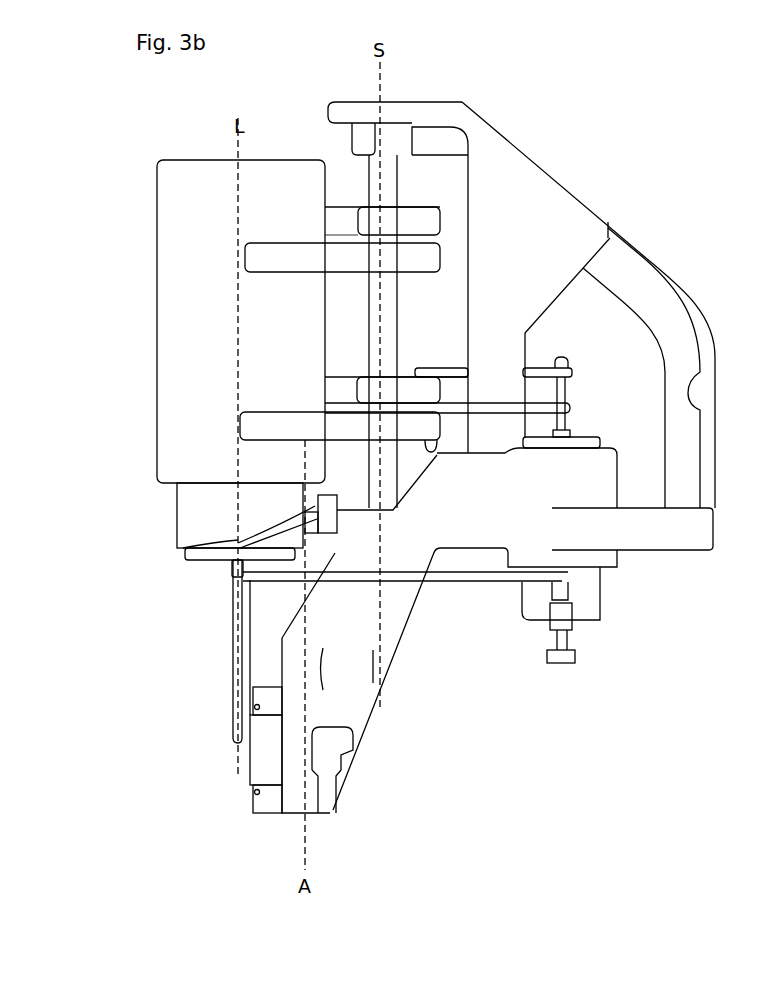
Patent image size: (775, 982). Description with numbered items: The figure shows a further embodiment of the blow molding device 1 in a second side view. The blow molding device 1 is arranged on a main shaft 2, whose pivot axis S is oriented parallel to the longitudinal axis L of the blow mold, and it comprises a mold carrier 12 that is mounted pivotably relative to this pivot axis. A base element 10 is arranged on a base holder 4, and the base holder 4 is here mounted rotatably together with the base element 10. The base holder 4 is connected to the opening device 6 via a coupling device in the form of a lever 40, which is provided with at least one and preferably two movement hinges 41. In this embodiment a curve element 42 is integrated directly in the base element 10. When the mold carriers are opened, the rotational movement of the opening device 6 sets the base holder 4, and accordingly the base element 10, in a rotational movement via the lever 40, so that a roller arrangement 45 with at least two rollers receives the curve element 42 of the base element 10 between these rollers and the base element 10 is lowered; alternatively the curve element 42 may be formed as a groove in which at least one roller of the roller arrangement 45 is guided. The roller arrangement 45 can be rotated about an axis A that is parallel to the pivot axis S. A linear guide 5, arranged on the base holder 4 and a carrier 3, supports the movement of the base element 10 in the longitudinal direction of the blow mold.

The blow molding device 1 is at (630, 131).
The main shaft 2 is at (368, 175).
The carrier 3 is at (540, 215).
The base holder 4 is at (233, 618).
The linear guide 5 is at (265, 757).
The opening device 6 is at (585, 578).
The base element 10 is at (193, 500).
The mold carrier 12 is at (183, 257).
The coupling device in the form of a lever 40 is at (473, 575).
The movement hinge 41 is at (233, 557).
The curve element 42 is at (187, 549).
The roller arrangement 45 is at (311, 506).